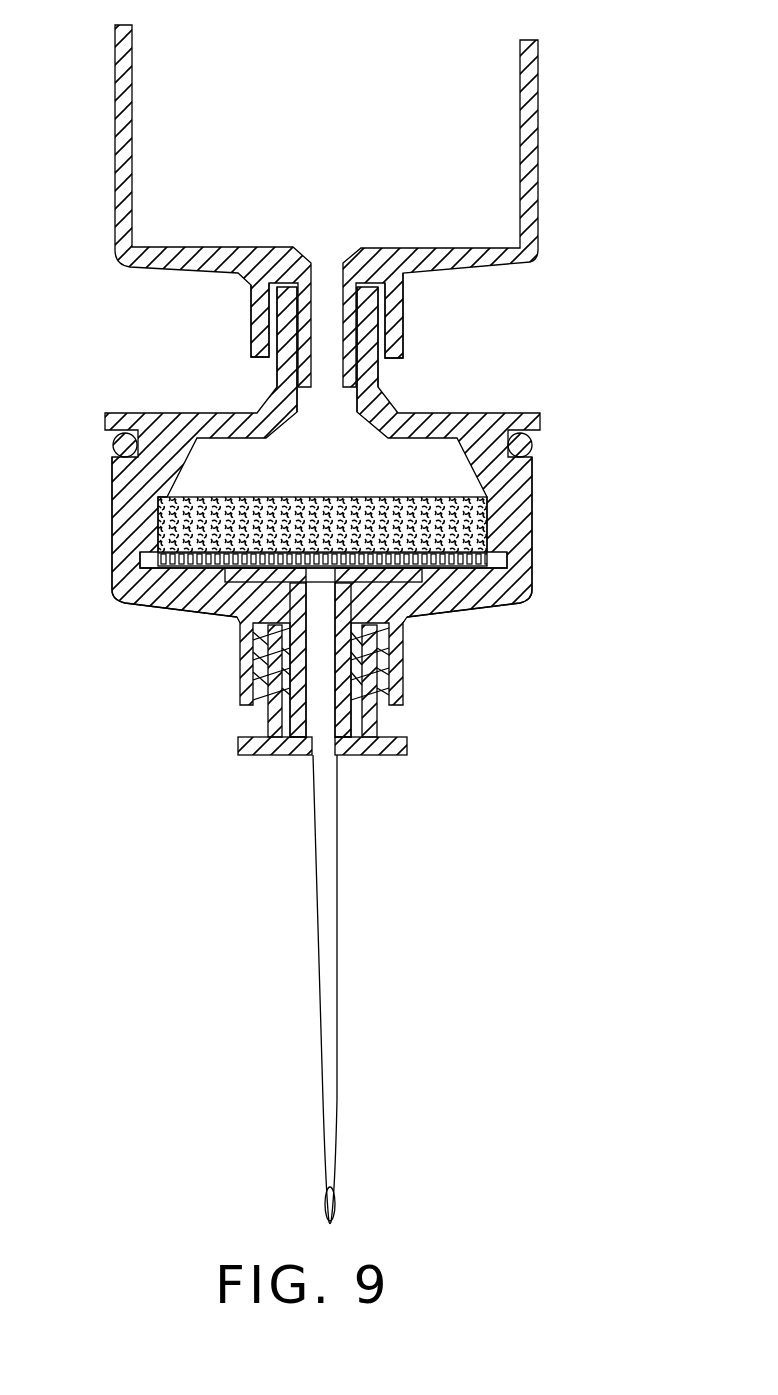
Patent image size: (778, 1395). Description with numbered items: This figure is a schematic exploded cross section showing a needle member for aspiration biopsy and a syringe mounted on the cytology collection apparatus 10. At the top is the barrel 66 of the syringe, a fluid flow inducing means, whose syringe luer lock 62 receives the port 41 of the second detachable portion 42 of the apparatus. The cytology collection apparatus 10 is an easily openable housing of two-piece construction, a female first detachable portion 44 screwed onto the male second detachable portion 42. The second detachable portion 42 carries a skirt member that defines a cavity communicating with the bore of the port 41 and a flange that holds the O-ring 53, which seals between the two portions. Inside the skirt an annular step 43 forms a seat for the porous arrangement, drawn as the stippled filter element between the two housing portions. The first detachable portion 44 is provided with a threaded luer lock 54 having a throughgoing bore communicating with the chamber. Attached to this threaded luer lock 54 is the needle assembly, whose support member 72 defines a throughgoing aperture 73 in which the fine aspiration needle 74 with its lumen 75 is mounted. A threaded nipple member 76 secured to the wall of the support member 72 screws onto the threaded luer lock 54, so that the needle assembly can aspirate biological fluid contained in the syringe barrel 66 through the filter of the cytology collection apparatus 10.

The cytology collection apparatus 10 is at (540, 517).
The port 41 is at (378, 372).
The second detachable portion 42 is at (137, 412).
The annular step 43 is at (500, 493).
The first detachable portion 44 is at (105, 580).
The O-ring 53 is at (533, 441).
The threaded luer lock 54 is at (403, 670).
The syringe luer lock 62 is at (403, 306).
The barrel 66 is at (539, 132).
The support member 72 is at (407, 746).
The throughgoing aperture 73 is at (311, 756).
The fine aspiration needle 74 is at (338, 798).
The lumen 75 is at (324, 847).
The threaded nipple member 76 is at (276, 705).